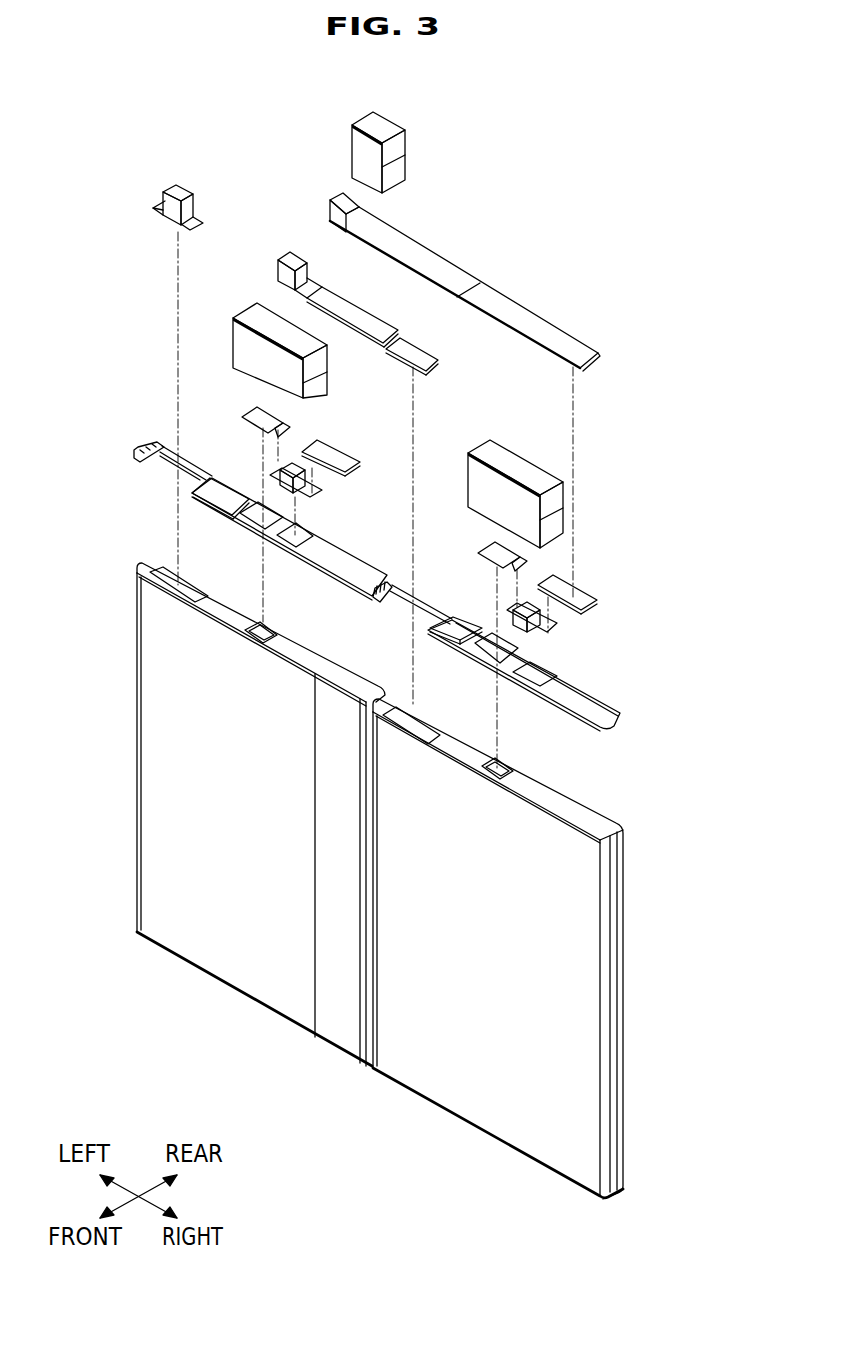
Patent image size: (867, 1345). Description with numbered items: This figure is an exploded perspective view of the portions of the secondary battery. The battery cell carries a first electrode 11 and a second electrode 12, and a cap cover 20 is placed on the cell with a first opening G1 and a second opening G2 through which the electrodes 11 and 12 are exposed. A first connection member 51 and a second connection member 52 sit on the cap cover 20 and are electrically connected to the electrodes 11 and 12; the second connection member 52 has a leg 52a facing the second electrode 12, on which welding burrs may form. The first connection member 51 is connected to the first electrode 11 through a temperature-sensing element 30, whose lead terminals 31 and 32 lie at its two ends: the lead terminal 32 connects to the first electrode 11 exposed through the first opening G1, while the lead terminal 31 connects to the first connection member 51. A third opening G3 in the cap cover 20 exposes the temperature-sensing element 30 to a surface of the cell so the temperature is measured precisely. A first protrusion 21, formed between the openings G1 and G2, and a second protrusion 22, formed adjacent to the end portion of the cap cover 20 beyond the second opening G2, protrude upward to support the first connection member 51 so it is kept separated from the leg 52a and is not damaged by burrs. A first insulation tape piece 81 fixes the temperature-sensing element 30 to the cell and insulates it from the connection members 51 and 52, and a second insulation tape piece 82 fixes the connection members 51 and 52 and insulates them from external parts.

The first electrode 11 is at (495, 780).
The second electrode 12 is at (422, 725).
The cap cover 20 is at (340, 567).
The first protrusion 21 is at (463, 622).
The second protrusion 22 is at (383, 577).
The temperature-sensing element 30 is at (538, 618).
The lead terminal 31 is at (587, 597).
The lead terminal 32 is at (490, 545).
The first connection member 51 is at (420, 253).
The second connection member 52 is at (357, 310).
The leg 52a is at (417, 352).
The first insulation tape piece 81 is at (558, 503).
The second insulation tape piece 82 is at (402, 148).
The first opening G1 is at (493, 657).
The second opening G2 is at (408, 608).
The third opening G3 is at (533, 680).